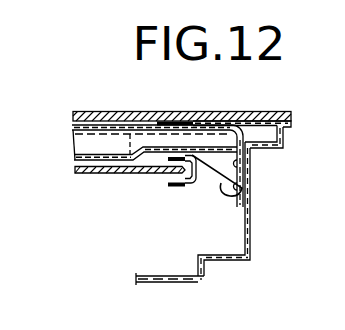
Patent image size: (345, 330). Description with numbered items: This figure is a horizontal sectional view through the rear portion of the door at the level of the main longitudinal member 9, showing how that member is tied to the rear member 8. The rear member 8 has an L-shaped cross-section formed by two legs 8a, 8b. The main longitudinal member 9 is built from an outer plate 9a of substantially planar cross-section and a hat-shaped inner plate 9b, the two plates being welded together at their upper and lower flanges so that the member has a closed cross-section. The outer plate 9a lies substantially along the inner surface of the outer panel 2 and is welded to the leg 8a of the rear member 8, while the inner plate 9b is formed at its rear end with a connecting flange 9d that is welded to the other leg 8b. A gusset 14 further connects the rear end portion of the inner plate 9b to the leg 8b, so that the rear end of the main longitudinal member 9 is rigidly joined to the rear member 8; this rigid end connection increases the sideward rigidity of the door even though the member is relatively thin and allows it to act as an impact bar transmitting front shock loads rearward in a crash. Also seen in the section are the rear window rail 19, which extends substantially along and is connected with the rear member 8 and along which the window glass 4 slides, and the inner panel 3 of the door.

The outer panel 2 is at (229, 112).
The inner panel 3 is at (166, 284).
The window glass 4 is at (117, 174).
The rear member 8 is at (242, 177).
The leg 8a is at (202, 121).
The leg 8b is at (251, 210).
The main longitudinal member 9 is at (177, 141).
The outer plate 9a is at (138, 124).
The inner plate 9b is at (82, 147).
The connecting flange 9d is at (252, 157).
The gusset 14 is at (251, 193).
The rear window rail 19 is at (192, 184).